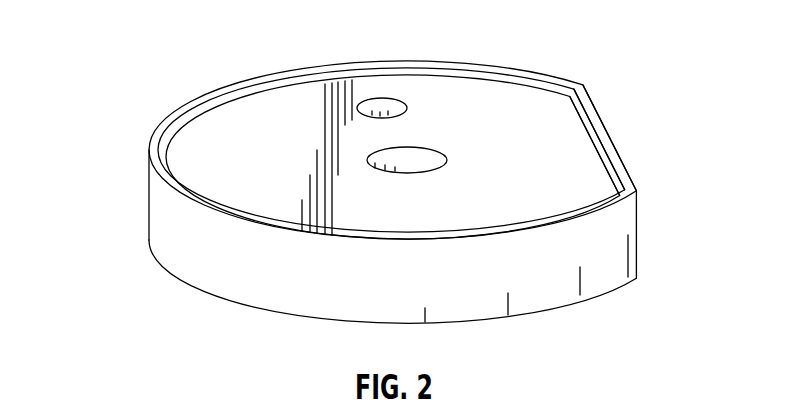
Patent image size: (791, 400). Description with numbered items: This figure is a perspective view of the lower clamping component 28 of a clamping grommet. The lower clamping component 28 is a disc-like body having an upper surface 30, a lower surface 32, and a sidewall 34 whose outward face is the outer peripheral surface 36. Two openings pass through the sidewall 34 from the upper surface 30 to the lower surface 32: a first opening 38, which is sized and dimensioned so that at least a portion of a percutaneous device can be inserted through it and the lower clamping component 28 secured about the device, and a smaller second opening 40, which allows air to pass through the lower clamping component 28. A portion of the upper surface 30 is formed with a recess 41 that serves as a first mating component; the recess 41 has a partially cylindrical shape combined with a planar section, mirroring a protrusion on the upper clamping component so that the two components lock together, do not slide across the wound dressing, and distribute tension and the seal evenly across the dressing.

The lower clamping component 28 is at (381, 171).
The upper surface 30 is at (238, 125).
The lower surface 32 is at (600, 292).
The sidewall 34 is at (149, 207).
The outer peripheral surface 36 is at (237, 263).
The first opening 38 is at (445, 162).
The second opening 40 is at (376, 104).
The recess 41 is at (587, 173).